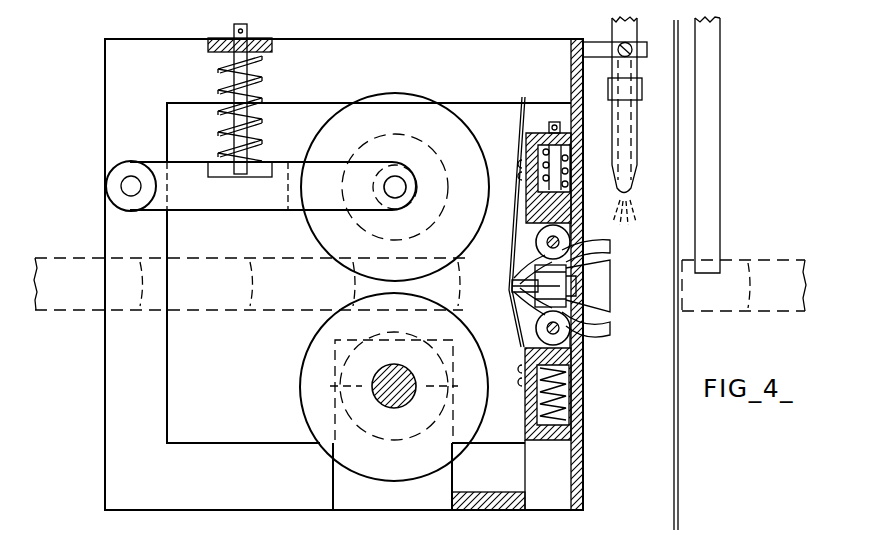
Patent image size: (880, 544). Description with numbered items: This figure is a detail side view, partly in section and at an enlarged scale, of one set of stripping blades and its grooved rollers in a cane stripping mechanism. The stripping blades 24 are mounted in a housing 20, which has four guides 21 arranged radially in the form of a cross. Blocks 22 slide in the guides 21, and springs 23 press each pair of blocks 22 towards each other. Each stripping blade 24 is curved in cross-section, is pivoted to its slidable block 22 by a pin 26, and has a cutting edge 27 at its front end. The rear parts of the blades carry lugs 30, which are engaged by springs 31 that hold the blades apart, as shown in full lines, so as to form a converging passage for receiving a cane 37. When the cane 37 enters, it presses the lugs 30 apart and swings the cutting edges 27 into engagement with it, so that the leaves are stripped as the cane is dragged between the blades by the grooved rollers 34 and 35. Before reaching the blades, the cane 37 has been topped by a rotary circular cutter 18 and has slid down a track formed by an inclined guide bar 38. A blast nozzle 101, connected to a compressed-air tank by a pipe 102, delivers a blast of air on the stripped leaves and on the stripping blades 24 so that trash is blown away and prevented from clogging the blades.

The rotary circular cutter 18 is at (680, 516).
The housing 20 is at (148, 354).
The guide 21 is at (513, 201).
The block 22 is at (562, 193).
The spring 23 is at (537, 134).
The stripping blade 24 is at (597, 287).
The pin 26 is at (545, 255).
The cutting edge 27 is at (606, 244).
The lug 30 is at (520, 300).
The spring 31 is at (521, 197).
The grooved roller 34 is at (320, 343).
The grooved roller 35 is at (320, 221).
The cane 37 is at (58, 275).
The guide bar 38 is at (710, 126).
The blast nozzle 101 is at (623, 172).
The pipe 102 is at (623, 32).